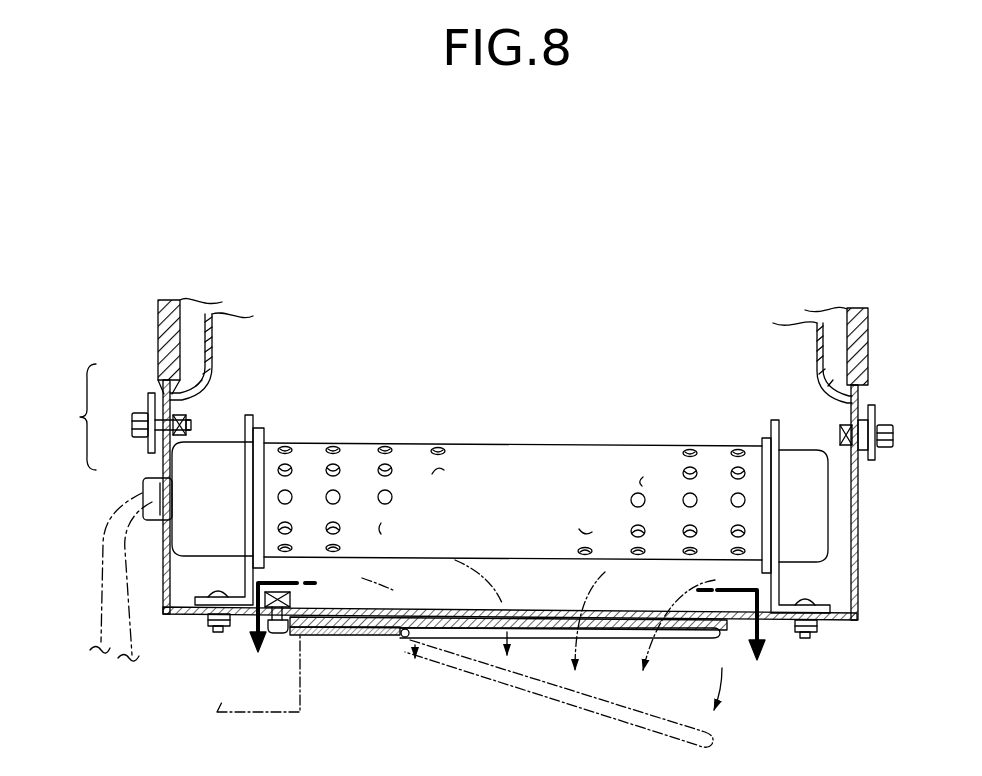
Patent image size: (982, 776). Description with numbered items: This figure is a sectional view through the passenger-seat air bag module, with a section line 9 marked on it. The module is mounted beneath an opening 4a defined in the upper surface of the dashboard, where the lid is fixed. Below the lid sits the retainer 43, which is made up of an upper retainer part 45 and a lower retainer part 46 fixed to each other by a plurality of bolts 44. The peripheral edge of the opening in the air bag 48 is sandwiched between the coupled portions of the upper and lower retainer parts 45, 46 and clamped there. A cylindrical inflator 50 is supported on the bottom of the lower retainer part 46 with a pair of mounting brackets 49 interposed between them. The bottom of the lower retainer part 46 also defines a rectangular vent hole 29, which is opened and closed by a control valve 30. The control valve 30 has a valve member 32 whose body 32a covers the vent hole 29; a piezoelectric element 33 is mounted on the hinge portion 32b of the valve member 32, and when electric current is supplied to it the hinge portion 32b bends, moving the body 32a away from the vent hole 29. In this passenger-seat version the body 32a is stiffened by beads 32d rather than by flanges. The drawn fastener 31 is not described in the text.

The opening 4a is at (162, 328).
The air bag 48 is at (210, 338).
The upper retainer part 45 is at (160, 388).
The bolts 44 is at (186, 427).
The lower retainer part 46 is at (162, 465).
The retainer 43 is at (70, 417).
The mounting brackets 49 is at (249, 420).
The cylindrical inflator 50 is at (536, 440).
The control valve 30 is at (622, 596).
The body 32a is at (533, 612).
The hinge portion 32b is at (335, 612).
The beads 32d is at (662, 638).
The rectangular vent hole 29 is at (385, 622).
The fixing bolt 31 is at (281, 634).
The piezoelectric element 33 is at (383, 636).
The valve member 32 is at (552, 646).
The section line IX-IX 9 is at (497, 651).